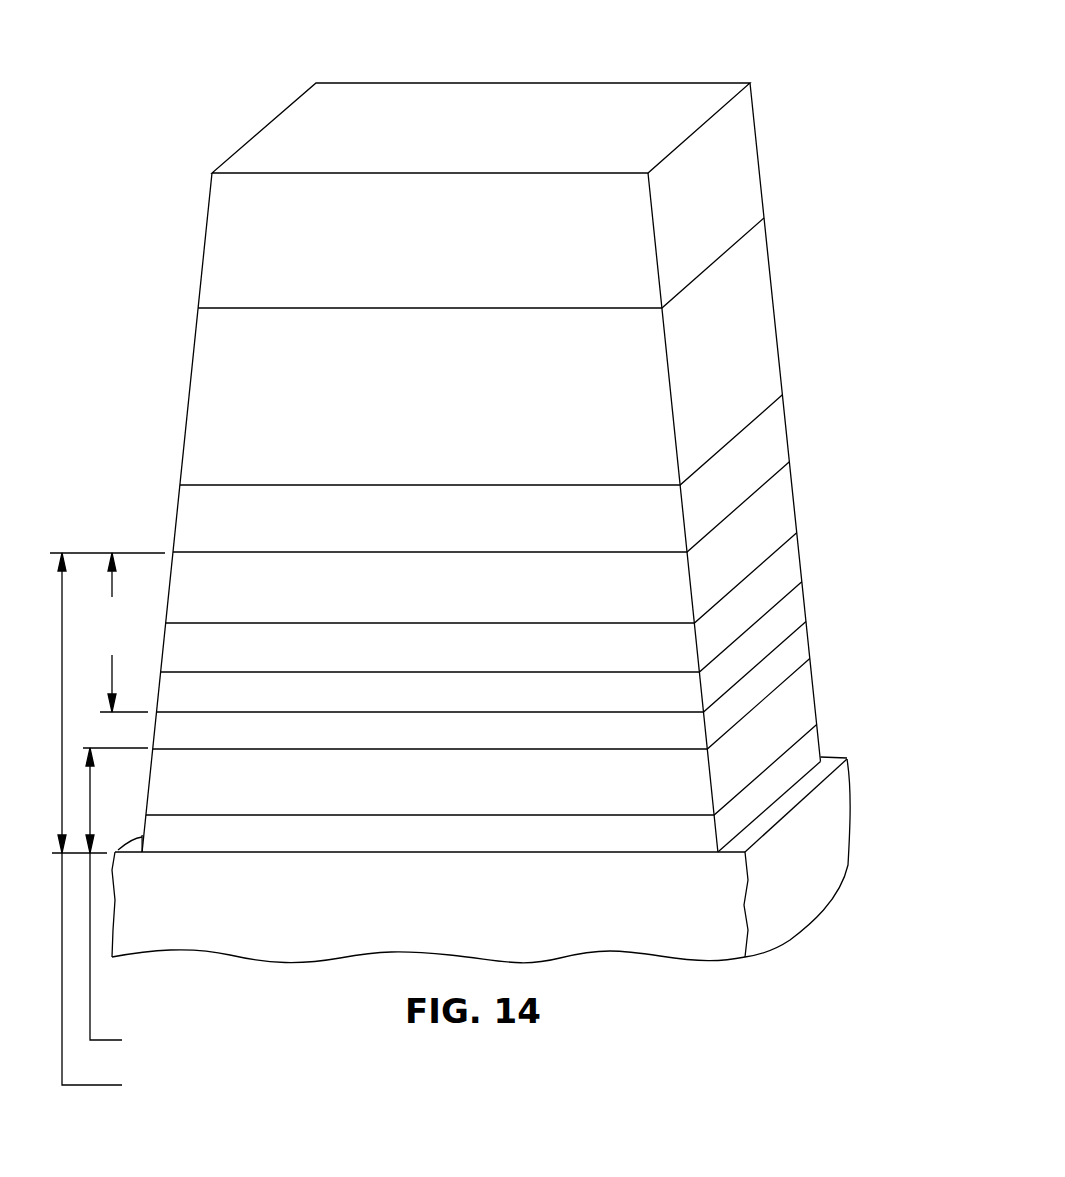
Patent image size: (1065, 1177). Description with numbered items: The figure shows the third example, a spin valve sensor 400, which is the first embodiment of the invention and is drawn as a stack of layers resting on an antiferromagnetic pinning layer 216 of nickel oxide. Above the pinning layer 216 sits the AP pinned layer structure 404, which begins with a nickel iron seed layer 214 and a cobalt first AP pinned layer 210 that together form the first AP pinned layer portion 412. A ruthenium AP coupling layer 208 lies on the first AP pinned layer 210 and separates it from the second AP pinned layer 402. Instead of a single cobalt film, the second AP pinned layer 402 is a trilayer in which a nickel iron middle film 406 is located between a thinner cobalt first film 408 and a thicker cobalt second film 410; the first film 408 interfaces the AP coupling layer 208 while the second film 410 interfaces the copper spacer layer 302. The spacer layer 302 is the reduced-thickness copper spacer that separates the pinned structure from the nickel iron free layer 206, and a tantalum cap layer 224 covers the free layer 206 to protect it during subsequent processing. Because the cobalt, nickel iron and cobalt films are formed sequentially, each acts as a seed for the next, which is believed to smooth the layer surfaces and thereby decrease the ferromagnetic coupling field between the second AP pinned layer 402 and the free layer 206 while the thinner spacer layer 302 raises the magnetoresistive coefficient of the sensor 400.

The spin valve sensor 400 is at (659, 61).
The cap layer 224 is at (748, 148).
The free layer 206 is at (763, 280).
The spacer layer 302 is at (780, 425).
The second cobalt film 410 is at (787, 493).
The nickel iron middle film 406 is at (795, 557).
The first cobalt film 408 is at (800, 607).
The AP coupling layer 208 is at (803, 645).
The first AP pinned layer 210 is at (810, 697).
The seed layer 214 is at (815, 747).
The antiferromagnetic pinning layer 216 is at (787, 907).
The second AP pinned layer 402 is at (107, 632).
The AP1 pinned layer 412 is at (156, 900).
The AP pinned layer structure 404 is at (181, 825).